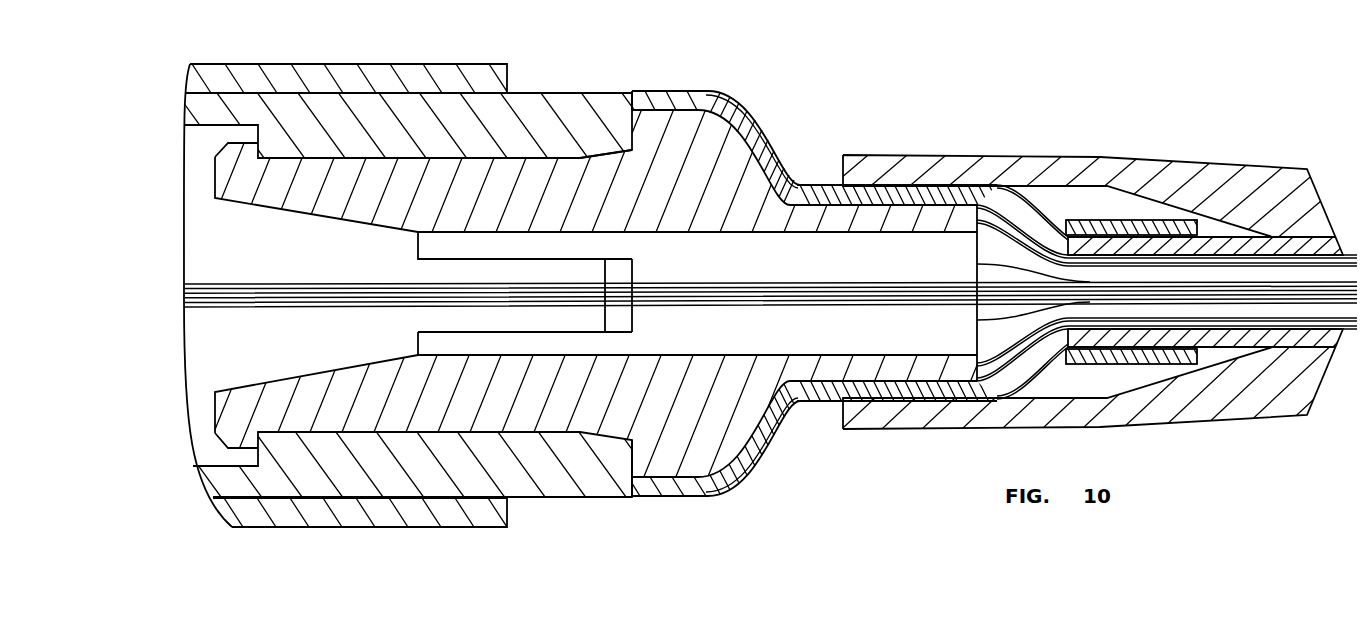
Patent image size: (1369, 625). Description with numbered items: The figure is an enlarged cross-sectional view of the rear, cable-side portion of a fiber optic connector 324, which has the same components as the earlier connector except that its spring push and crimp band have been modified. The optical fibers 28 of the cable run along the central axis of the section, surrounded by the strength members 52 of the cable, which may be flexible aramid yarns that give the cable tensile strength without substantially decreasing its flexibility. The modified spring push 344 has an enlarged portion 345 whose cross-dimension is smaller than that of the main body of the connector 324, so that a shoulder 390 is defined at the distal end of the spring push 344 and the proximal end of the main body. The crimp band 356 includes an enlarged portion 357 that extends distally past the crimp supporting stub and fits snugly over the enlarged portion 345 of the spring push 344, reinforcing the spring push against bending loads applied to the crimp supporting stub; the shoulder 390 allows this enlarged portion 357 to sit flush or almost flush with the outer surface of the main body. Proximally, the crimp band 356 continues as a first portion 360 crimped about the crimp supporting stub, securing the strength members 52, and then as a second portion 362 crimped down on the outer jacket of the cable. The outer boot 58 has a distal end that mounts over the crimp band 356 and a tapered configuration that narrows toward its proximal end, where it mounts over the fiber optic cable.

The fiber optic connector 324 is at (579, 66).
The enlarged portion of the spring push 345 is at (660, 100).
The enlarged portion of the crimp band 357 is at (690, 88).
The spring push 344 is at (732, 98).
The crimp band 356 is at (786, 99).
The first portion of the crimp band 360 is at (830, 183).
The strength members 52 is at (937, 198).
The second portion of the crimp band 362 is at (1102, 218).
The outer boot 58 is at (1165, 158).
The optical fibers 28 is at (258, 285).
The shoulder 390 is at (637, 493).